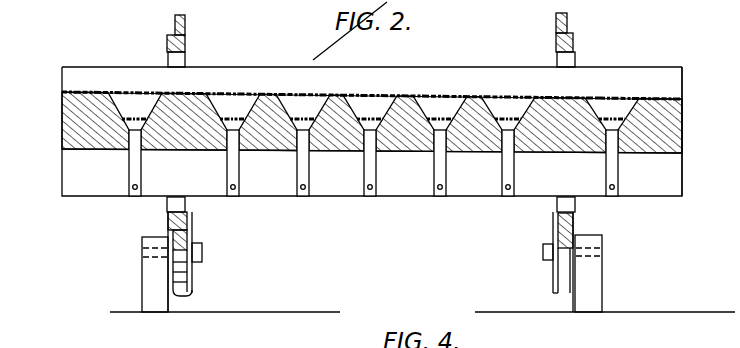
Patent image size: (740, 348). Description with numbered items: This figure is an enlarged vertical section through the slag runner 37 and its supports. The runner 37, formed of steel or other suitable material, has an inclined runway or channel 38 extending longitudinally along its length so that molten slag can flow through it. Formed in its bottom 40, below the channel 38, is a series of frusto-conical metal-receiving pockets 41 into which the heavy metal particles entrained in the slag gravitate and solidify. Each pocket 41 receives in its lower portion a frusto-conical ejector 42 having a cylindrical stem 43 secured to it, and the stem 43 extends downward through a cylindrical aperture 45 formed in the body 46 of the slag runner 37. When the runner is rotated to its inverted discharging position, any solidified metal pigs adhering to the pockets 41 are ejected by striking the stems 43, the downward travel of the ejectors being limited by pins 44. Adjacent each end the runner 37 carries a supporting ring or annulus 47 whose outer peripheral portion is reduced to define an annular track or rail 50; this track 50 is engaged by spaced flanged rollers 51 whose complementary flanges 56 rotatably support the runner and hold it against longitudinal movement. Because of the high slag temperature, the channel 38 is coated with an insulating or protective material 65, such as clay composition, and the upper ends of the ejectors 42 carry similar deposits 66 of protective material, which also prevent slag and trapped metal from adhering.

The slag runner 37 is at (62, 118).
The inclined runway or channel 38 is at (433, 78).
The bottom 40 is at (652, 99).
The frusto-conical metal-receiving pocket 41 is at (112, 137).
The frusto-conical ejector 42 is at (228, 128).
The cylindrical stem 43 is at (296, 167).
The pin 44 is at (229, 197).
The cylindrical aperture 45 is at (127, 146).
The body 46 is at (672, 140).
The supporting ring or annulus 47 is at (185, 42).
The annular track or rail 50 is at (175, 15).
The flanged roller 51 is at (173, 268).
The complementary flange 56 is at (192, 292).
The insulating or protective material 65 is at (636, 92).
The deposit of protective material 66 is at (373, 117).